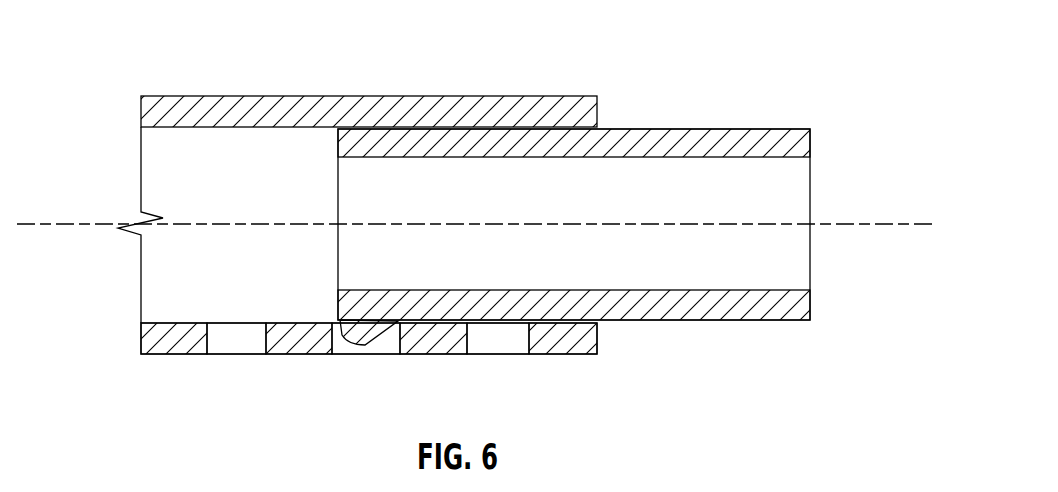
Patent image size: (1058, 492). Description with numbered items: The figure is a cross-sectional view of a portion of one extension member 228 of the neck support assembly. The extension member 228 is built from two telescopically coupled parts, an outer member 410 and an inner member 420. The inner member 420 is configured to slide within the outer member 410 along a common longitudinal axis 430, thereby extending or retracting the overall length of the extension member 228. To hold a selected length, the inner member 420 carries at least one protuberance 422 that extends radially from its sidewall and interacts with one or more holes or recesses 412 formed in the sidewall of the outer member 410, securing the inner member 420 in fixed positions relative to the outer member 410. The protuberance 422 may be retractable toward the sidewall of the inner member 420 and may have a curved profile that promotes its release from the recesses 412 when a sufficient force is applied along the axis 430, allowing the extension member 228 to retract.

The extension member 228 is at (178, 30).
The outer member 410 is at (222, 95).
The recesses 412 is at (527, 348).
The inner member 420 is at (783, 128).
The protuberance 422 is at (360, 346).
The longitudinal axis 430 is at (105, 224).